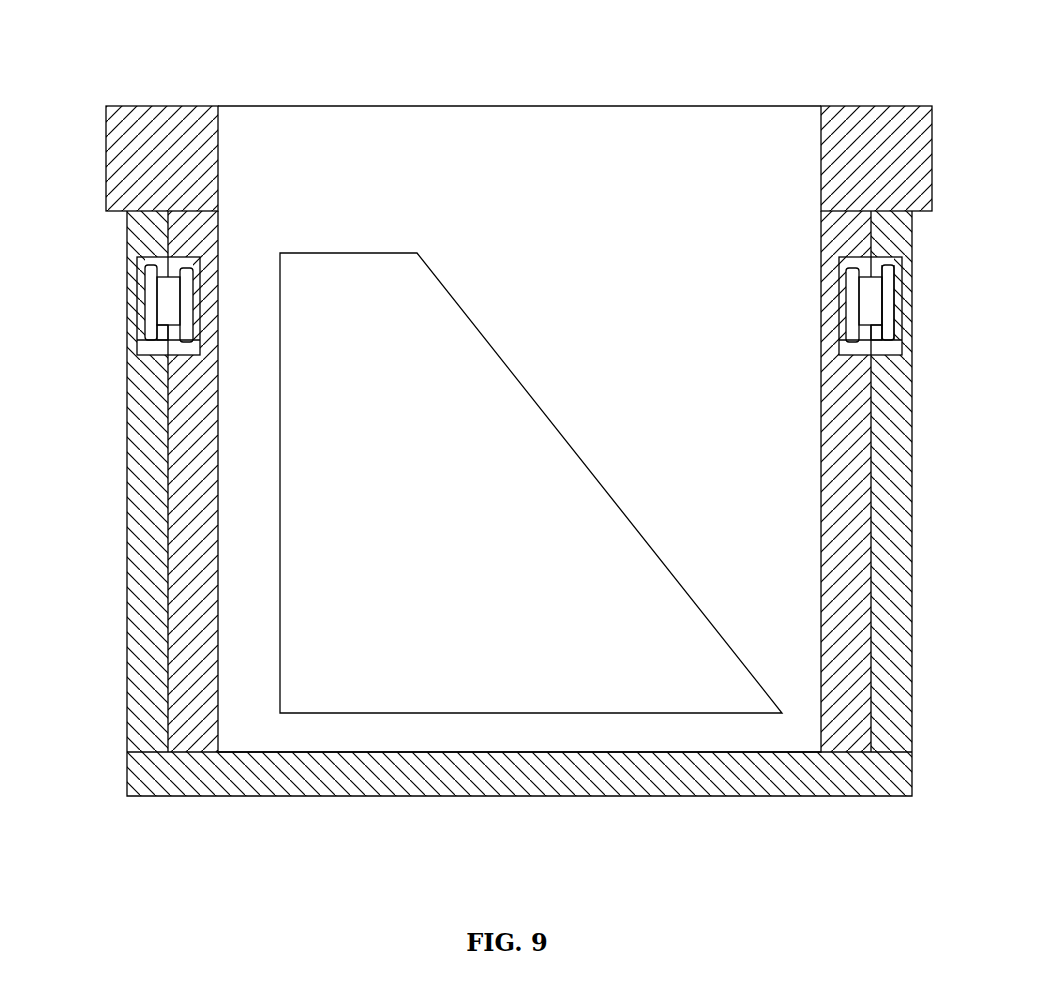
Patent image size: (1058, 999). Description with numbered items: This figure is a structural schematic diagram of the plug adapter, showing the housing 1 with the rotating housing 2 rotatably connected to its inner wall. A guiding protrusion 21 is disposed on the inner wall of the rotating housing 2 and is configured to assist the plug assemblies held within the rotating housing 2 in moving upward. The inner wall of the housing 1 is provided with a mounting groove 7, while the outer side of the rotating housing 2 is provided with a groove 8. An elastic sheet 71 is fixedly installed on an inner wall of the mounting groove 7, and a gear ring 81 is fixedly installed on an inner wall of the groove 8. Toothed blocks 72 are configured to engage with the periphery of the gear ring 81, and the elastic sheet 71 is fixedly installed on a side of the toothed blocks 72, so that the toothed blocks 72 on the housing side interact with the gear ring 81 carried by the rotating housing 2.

The housing 1 is at (130, 228).
The rotating housing 2 is at (473, 120).
The guiding protrusion 21 is at (497, 387).
The mounting groove 7 is at (140, 300).
The elastic sheet 71 is at (138, 337).
The toothed blocks 72 is at (875, 286).
The groove 8 is at (870, 343).
The gear ring 81 is at (868, 257).